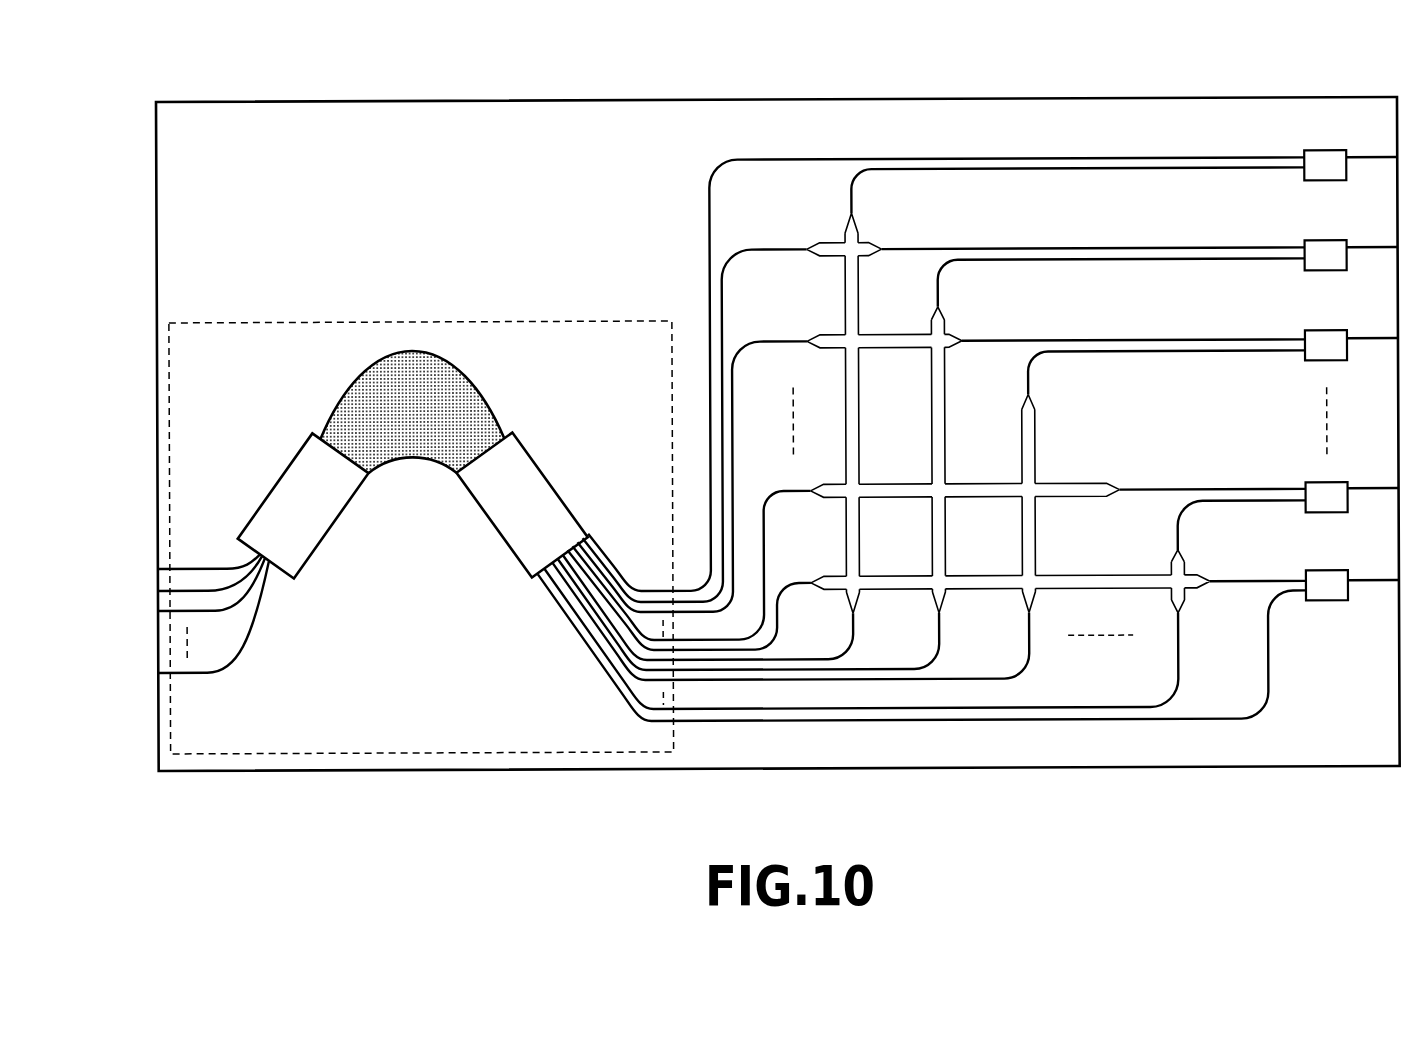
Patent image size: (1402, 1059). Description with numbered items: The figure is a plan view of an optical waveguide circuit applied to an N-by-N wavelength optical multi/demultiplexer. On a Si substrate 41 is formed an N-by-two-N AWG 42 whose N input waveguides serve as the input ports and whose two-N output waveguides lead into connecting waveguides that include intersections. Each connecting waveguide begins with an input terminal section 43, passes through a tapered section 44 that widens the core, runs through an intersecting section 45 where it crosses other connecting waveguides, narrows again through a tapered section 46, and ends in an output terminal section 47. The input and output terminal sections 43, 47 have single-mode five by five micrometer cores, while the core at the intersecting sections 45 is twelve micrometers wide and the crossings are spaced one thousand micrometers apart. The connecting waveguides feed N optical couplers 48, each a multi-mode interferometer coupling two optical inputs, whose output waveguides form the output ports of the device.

The Si substrate 41 is at (428, 102).
The N×2N AWG 42 is at (320, 323).
The input terminal section 43 is at (768, 343).
The tapered section 44 is at (818, 343).
The intersecting section 45 is at (895, 343).
The tapered section 46 is at (963, 343).
The output terminal section 47 is at (1076, 339).
The optical coupler 48 is at (1322, 154).